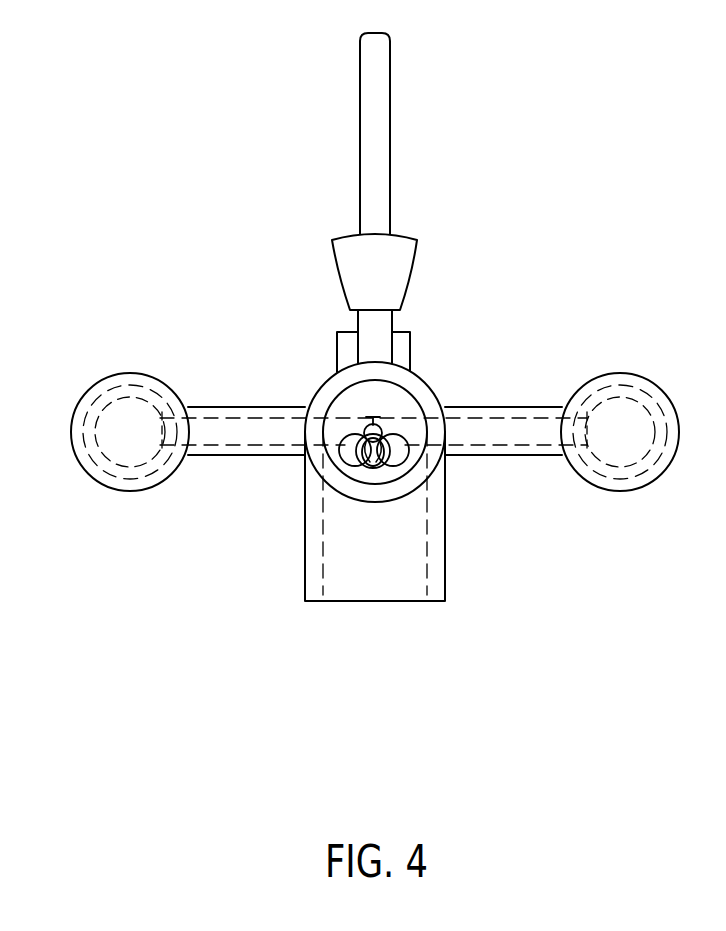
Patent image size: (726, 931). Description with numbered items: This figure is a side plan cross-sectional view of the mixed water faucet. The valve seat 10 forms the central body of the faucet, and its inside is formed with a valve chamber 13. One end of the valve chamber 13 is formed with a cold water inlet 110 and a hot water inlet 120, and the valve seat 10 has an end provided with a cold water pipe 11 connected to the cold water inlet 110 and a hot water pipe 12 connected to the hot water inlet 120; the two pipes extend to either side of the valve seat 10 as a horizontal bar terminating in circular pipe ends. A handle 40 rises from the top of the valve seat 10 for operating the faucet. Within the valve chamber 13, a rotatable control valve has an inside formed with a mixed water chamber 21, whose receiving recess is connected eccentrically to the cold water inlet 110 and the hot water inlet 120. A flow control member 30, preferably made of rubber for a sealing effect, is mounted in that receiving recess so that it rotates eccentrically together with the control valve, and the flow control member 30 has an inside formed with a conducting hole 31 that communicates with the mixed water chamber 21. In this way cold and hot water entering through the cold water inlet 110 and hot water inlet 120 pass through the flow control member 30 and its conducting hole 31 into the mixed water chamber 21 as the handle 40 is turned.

The valve seat 10 is at (491, 455).
The cold water pipe 11 is at (590, 374).
The hot water pipe 12 is at (145, 374).
The valve chamber 13 is at (322, 388).
The mixed water chamber 21 is at (382, 427).
The flow control member 30 is at (386, 436).
The conducting hole 31 is at (376, 467).
The handle 40 is at (360, 52).
The cold water inlet 110 is at (393, 462).
The hot water inlet 120 is at (360, 461).